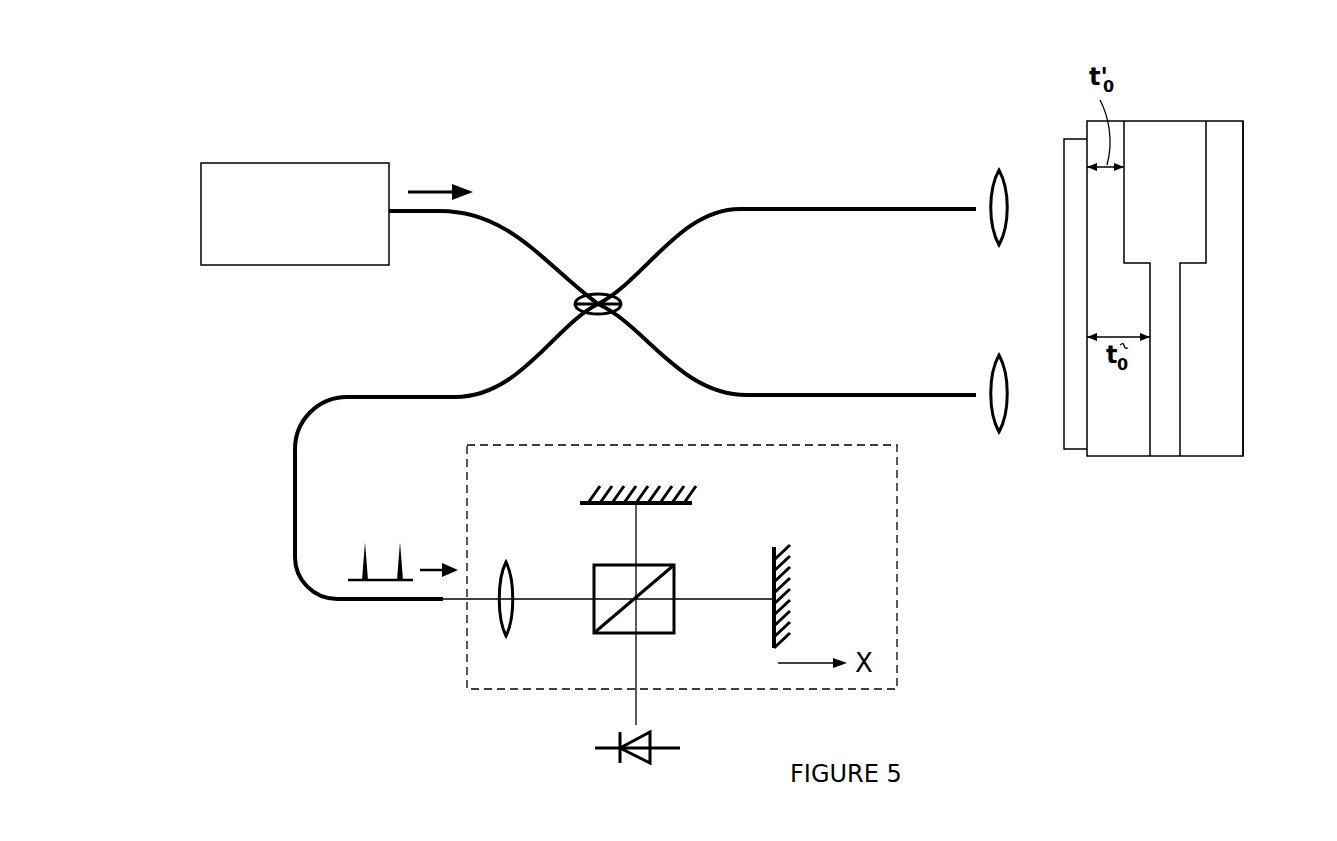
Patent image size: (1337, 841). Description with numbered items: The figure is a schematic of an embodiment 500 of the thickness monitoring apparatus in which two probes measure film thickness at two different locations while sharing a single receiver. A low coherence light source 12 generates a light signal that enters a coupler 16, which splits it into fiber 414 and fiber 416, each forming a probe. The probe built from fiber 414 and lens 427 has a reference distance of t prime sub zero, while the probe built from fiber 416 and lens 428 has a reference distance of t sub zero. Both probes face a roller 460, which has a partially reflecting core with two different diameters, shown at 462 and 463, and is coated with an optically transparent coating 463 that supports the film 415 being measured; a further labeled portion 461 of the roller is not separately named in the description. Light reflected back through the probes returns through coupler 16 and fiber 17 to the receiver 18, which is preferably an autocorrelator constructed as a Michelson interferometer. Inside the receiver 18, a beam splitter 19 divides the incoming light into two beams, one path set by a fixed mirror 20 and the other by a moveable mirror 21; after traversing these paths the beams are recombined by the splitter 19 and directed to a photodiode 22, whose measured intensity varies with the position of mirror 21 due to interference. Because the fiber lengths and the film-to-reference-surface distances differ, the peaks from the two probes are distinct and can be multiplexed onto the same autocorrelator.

The optical measurement system 500 is at (296, 91).
The low coherence light source 12 is at (362, 265).
The coupler 16 is at (598, 314).
The fiber 17 is at (402, 398).
The receiver 18 is at (893, 494).
The beam splitter 19 is at (674, 627).
The fixed mirror 20 is at (672, 507).
The moveable mirror 21 is at (772, 560).
The photodiode 22 is at (640, 765).
The fiber 414 is at (792, 210).
The fiber 416 is at (827, 394).
The lens 427 is at (992, 178).
The lens 428 is at (993, 370).
The film 415 is at (1064, 425).
The roller 460 is at (1215, 456).
The first layer 461 is at (1182, 125).
The core diameter 462 is at (1173, 372).
The optically transparent coating 463 is at (1235, 210).